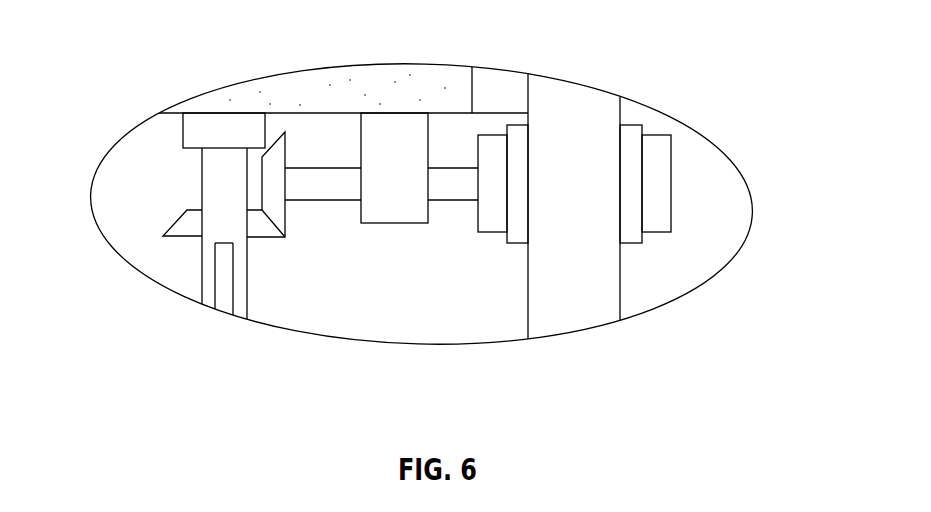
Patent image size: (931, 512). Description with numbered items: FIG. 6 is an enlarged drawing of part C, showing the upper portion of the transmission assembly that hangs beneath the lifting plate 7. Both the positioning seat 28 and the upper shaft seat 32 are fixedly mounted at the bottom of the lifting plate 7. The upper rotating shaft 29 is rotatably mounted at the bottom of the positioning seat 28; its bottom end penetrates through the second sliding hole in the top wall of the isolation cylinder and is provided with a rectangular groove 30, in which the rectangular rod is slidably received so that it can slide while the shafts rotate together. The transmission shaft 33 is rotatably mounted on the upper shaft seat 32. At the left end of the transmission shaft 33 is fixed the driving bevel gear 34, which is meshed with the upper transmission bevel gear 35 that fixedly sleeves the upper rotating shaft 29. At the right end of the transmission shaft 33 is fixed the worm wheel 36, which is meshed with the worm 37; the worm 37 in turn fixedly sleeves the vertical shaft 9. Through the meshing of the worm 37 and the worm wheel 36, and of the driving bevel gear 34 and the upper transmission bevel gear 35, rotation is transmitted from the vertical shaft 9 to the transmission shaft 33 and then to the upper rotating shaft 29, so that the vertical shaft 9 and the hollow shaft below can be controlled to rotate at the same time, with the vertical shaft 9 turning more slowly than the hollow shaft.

The part C is at (507, 72).
The lifting plate 7 is at (335, 88).
The vertical shaft 9 is at (577, 300).
The positioning seat 28 is at (222, 127).
The upper rotating shaft 29 is at (217, 183).
The rectangular groove 30 is at (223, 267).
The upper shaft seat 32 is at (397, 143).
The transmission shaft 33 is at (328, 188).
The driving bevel gear 34 is at (277, 155).
The upper transmission bevel gear 35 is at (173, 222).
The worm wheel 36 is at (673, 185).
The worm 37 is at (633, 247).